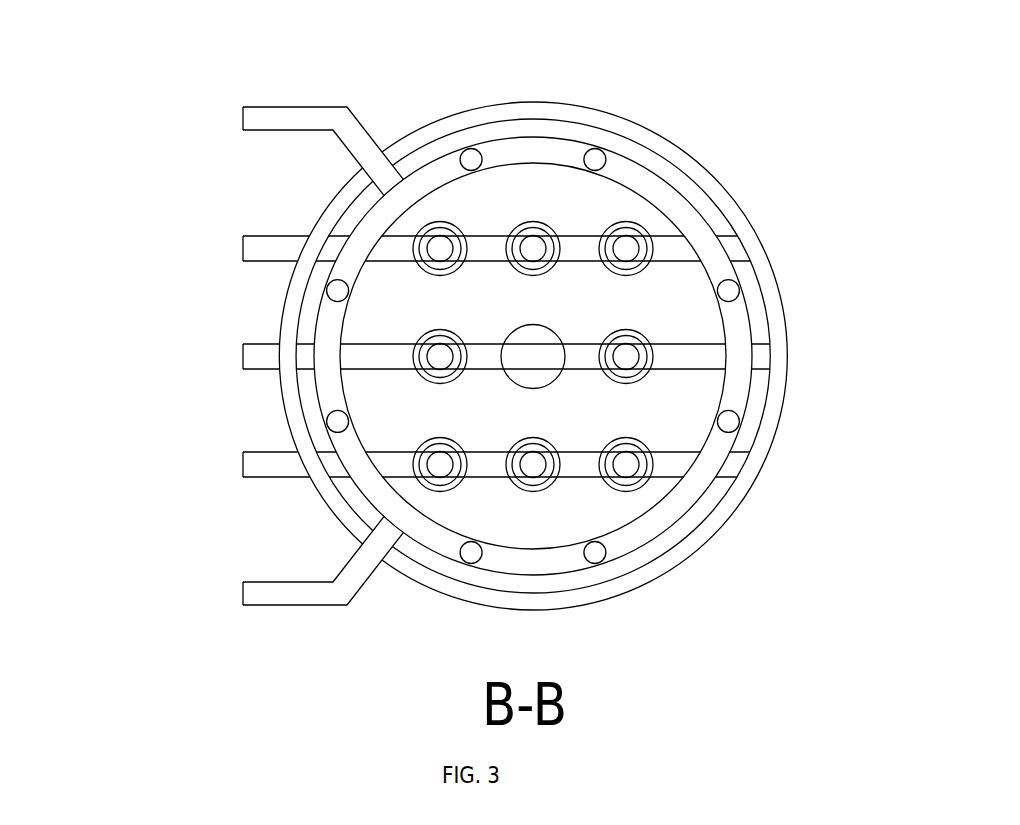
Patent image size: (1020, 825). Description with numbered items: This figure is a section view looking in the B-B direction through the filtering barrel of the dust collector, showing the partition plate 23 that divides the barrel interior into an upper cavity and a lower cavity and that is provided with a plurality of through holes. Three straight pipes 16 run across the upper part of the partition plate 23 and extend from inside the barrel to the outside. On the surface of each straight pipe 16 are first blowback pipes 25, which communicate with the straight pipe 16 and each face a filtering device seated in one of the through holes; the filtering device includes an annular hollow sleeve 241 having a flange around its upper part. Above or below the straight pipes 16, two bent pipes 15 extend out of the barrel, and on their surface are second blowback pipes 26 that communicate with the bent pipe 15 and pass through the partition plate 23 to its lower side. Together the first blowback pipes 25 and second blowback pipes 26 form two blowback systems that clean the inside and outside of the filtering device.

The bent pipe 15 is at (245, 118).
The straight pipe 16 is at (245, 464).
The partition plate 23 is at (513, 193).
The first blowback pipe 25 is at (626, 464).
The annular hollow sleeve 241 is at (542, 483).
The second blowback pipe 26 is at (595, 553).